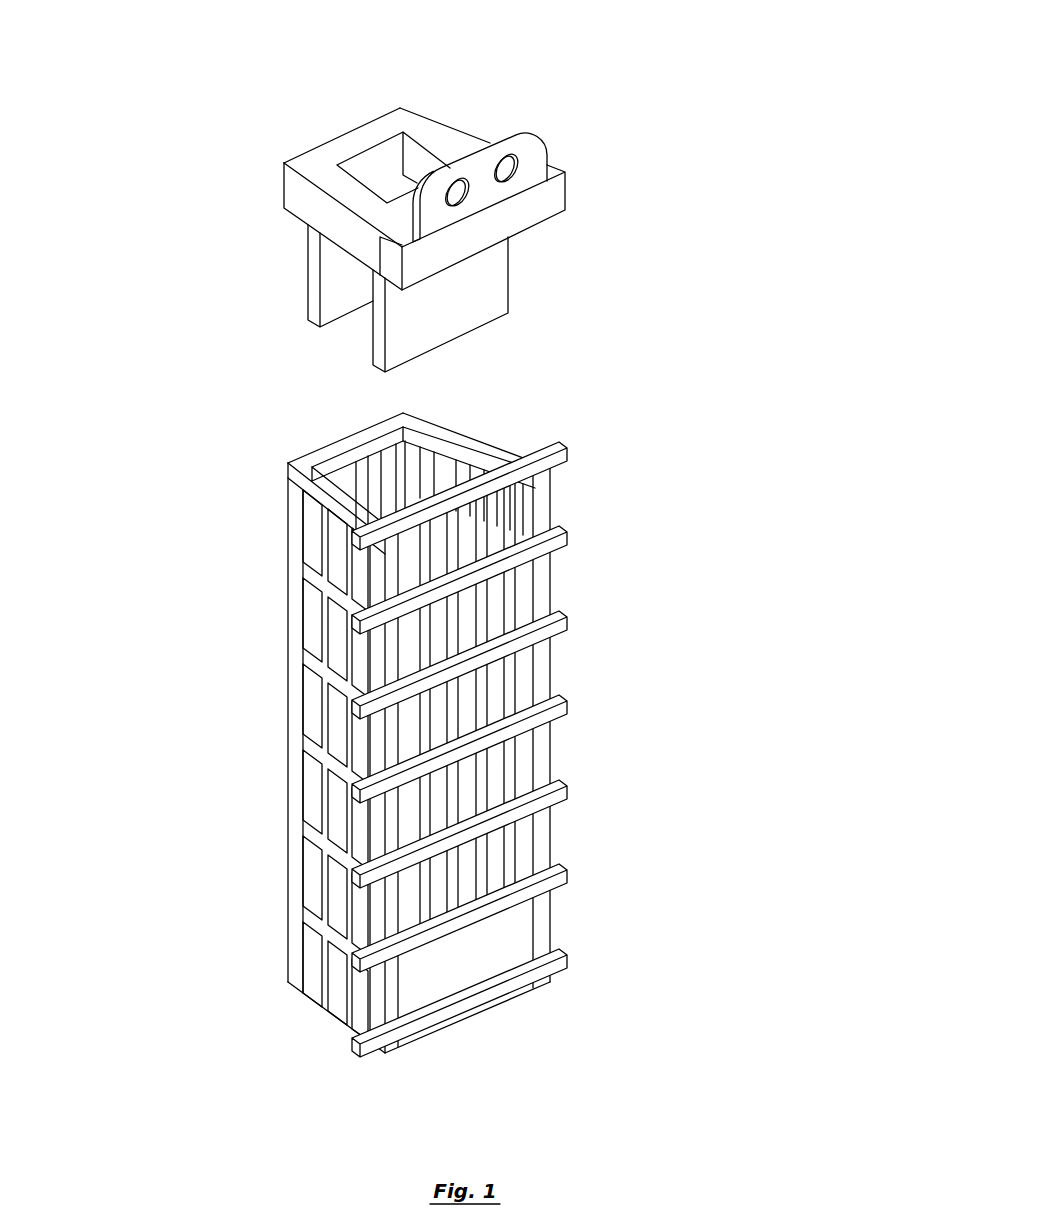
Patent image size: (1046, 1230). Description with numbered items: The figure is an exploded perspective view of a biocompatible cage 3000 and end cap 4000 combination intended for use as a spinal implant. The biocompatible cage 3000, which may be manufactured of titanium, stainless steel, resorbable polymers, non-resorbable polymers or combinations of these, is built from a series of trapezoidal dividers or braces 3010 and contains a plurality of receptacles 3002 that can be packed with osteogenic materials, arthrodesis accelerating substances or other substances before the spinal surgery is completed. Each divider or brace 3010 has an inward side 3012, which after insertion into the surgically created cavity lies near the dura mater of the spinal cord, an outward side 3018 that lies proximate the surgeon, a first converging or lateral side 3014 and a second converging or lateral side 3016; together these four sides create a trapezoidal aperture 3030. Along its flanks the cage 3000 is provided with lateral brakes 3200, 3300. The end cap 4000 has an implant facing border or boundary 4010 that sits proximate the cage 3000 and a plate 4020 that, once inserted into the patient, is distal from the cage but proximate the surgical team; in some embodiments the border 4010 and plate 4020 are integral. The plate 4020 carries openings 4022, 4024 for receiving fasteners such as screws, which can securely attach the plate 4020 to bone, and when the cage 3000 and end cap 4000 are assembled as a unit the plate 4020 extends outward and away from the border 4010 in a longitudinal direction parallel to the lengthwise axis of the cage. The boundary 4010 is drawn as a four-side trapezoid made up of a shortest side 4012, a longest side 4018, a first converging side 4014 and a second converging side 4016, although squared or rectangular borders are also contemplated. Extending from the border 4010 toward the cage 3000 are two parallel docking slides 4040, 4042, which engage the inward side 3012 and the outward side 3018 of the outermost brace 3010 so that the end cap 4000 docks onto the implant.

The end cap 4000 is at (473, 194).
The implant facing border 4010 is at (323, 214).
The shortest side 4012 is at (350, 125).
The first converging side 4014 is at (333, 202).
The second converging side 4016 is at (448, 115).
The longest side 4018 is at (398, 267).
The plate 4020 is at (567, 189).
The opening 4022 is at (472, 202).
The opening 4024 is at (525, 157).
The docking slide 4040 is at (305, 303).
The docking slide 4042 is at (515, 290).
The biocompatible cage 3000 is at (379, 750).
The receptacle 3002 is at (428, 995).
The trapezoidal divider 3010 is at (428, 749).
The inward side 3012 is at (345, 438).
The first converging side 3014 is at (340, 510).
The second converging side 3016 is at (478, 432).
The outward side 3018 is at (460, 512).
The trapezoidal aperture 3030 is at (457, 980).
The lateral brake 3200 is at (352, 880).
The lateral brake 3300 is at (565, 560).